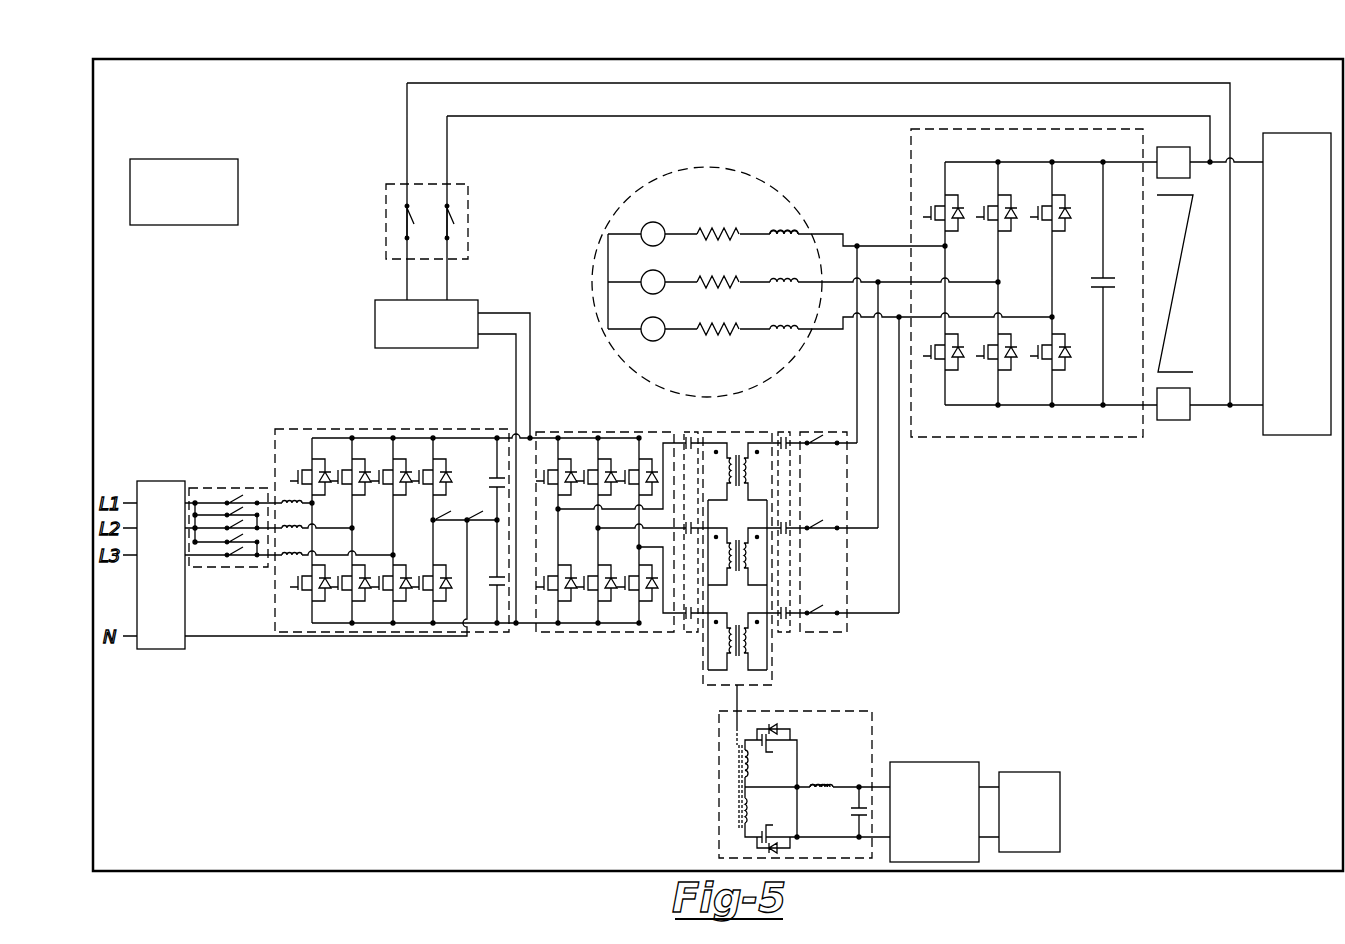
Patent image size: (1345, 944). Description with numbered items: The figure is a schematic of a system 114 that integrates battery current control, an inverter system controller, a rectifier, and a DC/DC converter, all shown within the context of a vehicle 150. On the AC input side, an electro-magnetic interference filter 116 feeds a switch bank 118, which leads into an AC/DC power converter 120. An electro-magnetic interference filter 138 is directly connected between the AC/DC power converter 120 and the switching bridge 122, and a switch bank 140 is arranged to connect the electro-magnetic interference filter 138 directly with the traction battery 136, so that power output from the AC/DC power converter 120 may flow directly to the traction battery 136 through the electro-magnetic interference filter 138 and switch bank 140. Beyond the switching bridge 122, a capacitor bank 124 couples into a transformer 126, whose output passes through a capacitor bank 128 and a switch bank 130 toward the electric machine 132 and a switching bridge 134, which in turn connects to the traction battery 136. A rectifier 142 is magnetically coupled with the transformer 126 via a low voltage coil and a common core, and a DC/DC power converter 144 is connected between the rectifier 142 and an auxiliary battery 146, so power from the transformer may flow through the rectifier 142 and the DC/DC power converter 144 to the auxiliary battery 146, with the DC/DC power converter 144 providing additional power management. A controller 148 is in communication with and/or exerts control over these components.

The system 114 is at (203, 765).
The electro-magnetic interference filter 116 is at (162, 481).
The switch bank 118 is at (230, 488).
The AC/DC power converter 120 is at (338, 429).
The switching bridge 122 is at (605, 632).
The capacitor bank 124 is at (690, 632).
The transformer 126 is at (742, 432).
The capacitor bank 128 is at (785, 632).
The switch bank 130 is at (820, 632).
The electric machine 132 is at (592, 282).
The switching bridge 134 is at (911, 163).
The traction battery 136 is at (1297, 437).
The electro-magnetic interference filter 138 is at (375, 325).
The switch bank 140 is at (386, 215).
The rectifier 142 is at (719, 785).
The DC/DC power converter 144 is at (935, 762).
The auxiliary battery 146 is at (1062, 810).
The controller 148 is at (185, 159).
The vehicle 150 is at (718, 58).